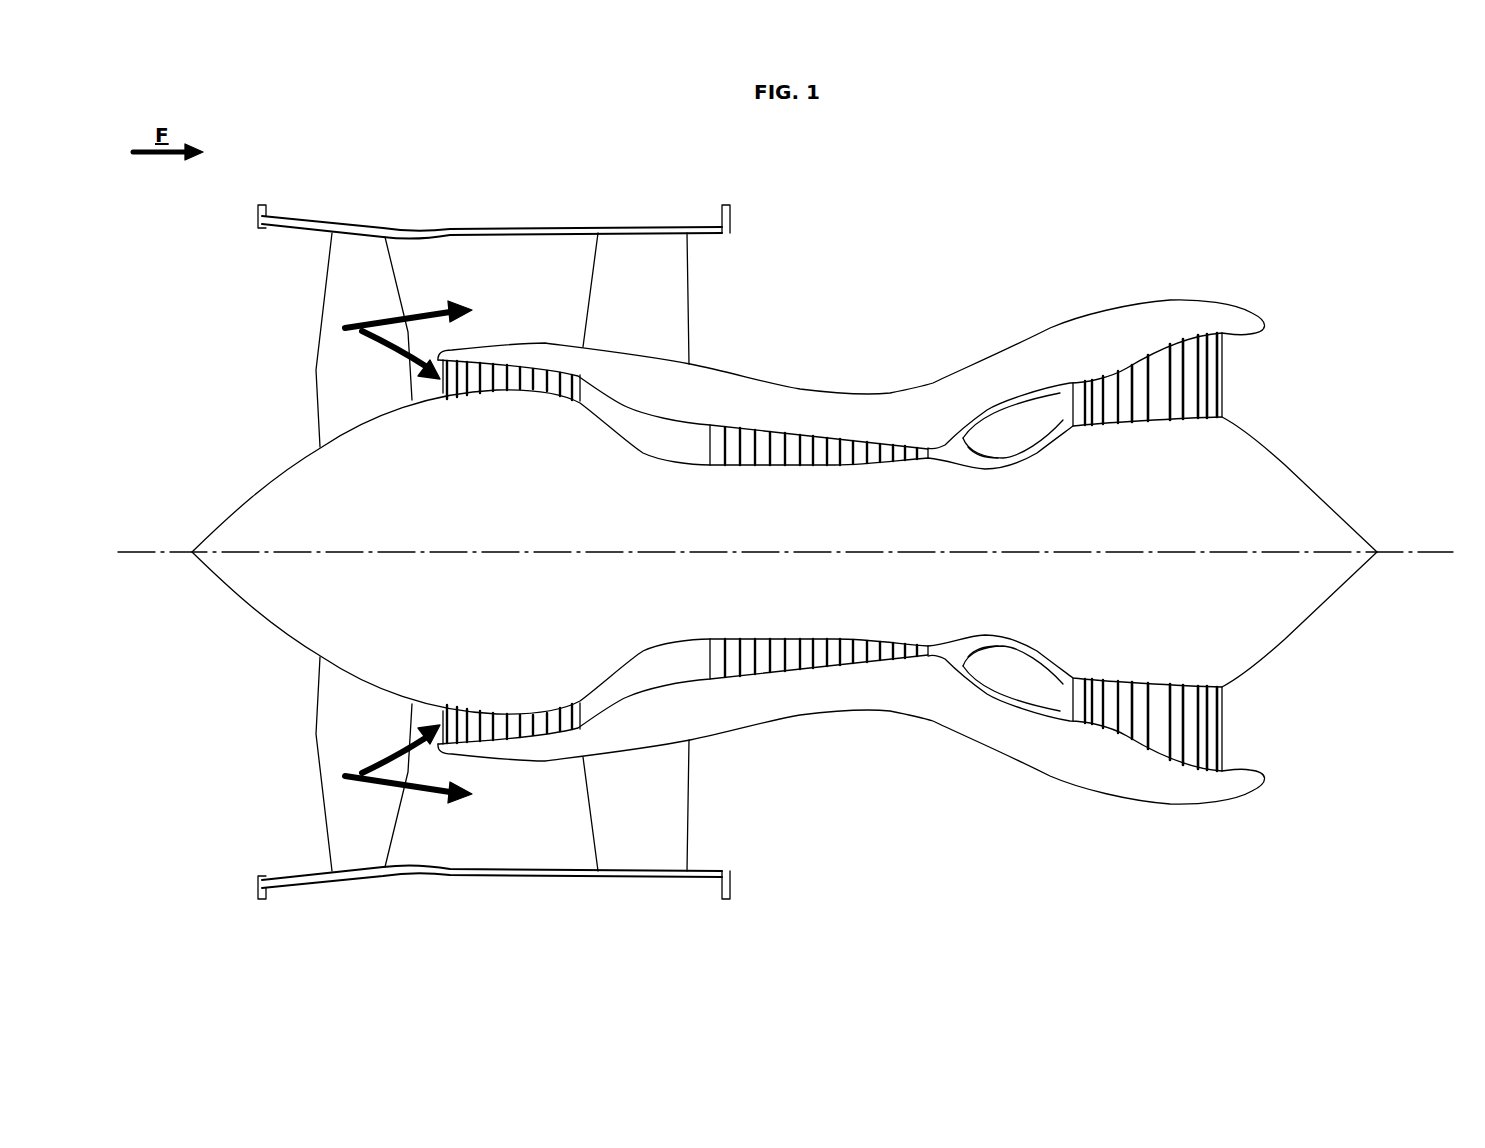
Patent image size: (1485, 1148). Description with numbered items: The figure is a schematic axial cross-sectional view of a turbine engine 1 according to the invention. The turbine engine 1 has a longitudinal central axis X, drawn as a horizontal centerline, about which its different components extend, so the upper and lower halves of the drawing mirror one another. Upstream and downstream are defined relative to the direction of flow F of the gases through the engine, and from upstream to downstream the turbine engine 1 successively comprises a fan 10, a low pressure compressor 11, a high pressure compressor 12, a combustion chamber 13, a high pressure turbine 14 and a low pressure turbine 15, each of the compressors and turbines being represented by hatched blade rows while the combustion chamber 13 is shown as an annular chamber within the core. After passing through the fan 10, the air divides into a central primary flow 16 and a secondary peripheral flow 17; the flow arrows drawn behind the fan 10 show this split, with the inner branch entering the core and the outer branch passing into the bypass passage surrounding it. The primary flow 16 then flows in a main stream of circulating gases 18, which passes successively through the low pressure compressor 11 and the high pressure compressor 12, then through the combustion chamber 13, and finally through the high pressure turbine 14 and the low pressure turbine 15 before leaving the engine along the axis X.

The turbine engine 1 is at (932, 177).
The fan 10 is at (357, 293).
The low pressure compressor 11 is at (497, 373).
The high pressure compressor 12 is at (800, 437).
The combustion chamber 13 is at (1011, 445).
The high pressure turbine 14 is at (1107, 398).
The low pressure turbine 15 is at (1195, 380).
The central primary flow 16 is at (383, 360).
The secondary peripheral flow 17 is at (412, 335).
The main stream of circulating gases 18 is at (661, 437).
The longitudinal central axis X is at (1432, 551).